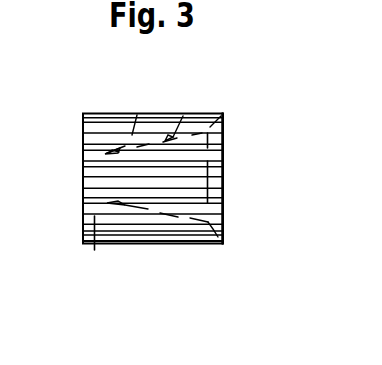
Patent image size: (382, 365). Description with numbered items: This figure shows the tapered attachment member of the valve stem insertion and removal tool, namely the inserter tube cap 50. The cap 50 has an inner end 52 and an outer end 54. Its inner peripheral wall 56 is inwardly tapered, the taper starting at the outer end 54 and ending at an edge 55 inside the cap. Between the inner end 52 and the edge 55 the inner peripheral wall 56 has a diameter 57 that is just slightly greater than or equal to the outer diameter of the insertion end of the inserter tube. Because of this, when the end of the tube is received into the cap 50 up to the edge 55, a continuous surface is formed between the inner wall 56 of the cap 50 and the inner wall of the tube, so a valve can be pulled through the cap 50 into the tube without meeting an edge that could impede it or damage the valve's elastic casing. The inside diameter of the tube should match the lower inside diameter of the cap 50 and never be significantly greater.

The inserter tube cap 50 is at (110, 105).
The inner end 52 is at (85, 182).
The outer end 54 is at (220, 165).
The edge 55 is at (132, 135).
The inner peripheral wall 56 is at (177, 130).
The diameter of inner peripheral wall 57 is at (95, 263).